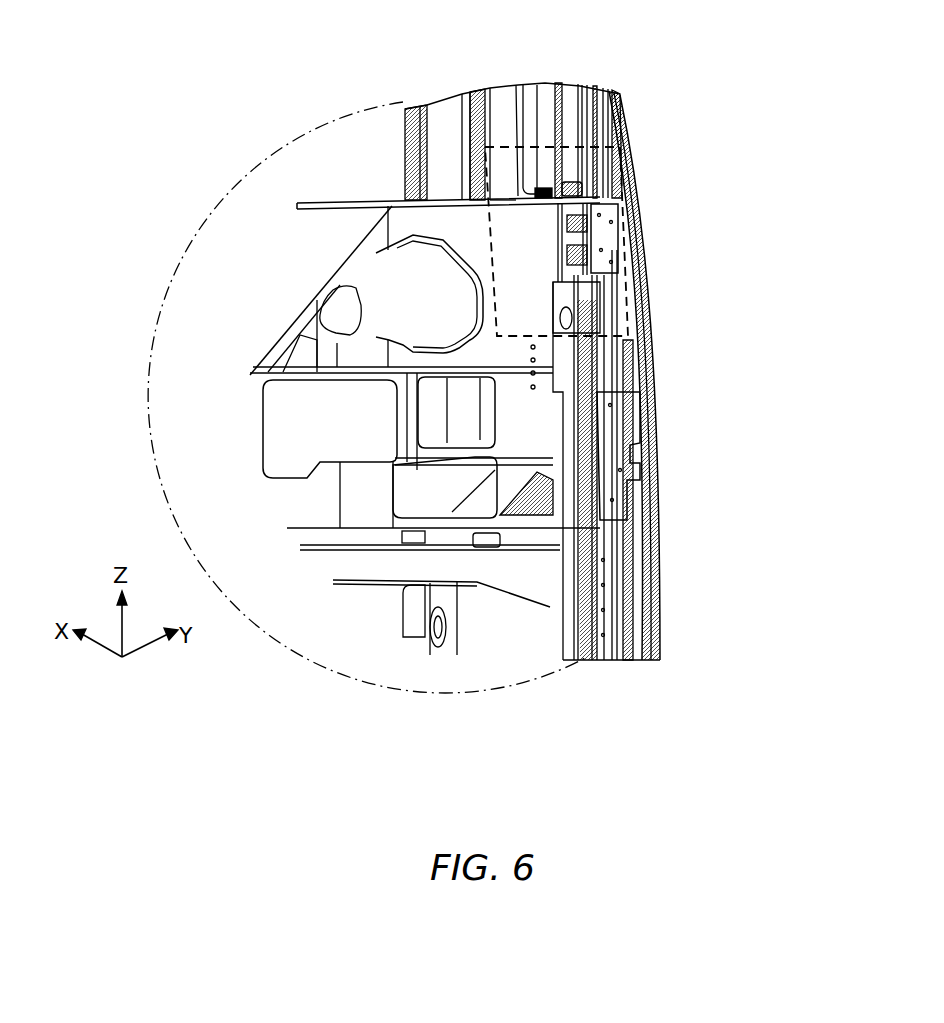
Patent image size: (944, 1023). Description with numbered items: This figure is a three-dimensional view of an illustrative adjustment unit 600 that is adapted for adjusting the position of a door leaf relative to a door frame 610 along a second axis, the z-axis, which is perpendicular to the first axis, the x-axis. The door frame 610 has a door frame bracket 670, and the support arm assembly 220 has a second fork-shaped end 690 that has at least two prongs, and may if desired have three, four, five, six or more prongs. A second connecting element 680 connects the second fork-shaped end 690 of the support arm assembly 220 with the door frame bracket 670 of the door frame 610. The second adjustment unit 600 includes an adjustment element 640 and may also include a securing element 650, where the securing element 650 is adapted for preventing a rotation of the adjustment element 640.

The adjustment unit 600 is at (505, 147).
The door frame 610 is at (645, 618).
The adjustment element 640 is at (573, 185).
The securing element 650 is at (535, 192).
The door frame bracket 670 is at (607, 243).
The second connecting element 680 is at (662, 208).
The second fork-shaped end 690 is at (515, 231).
The support arm assembly 220 is at (404, 282).